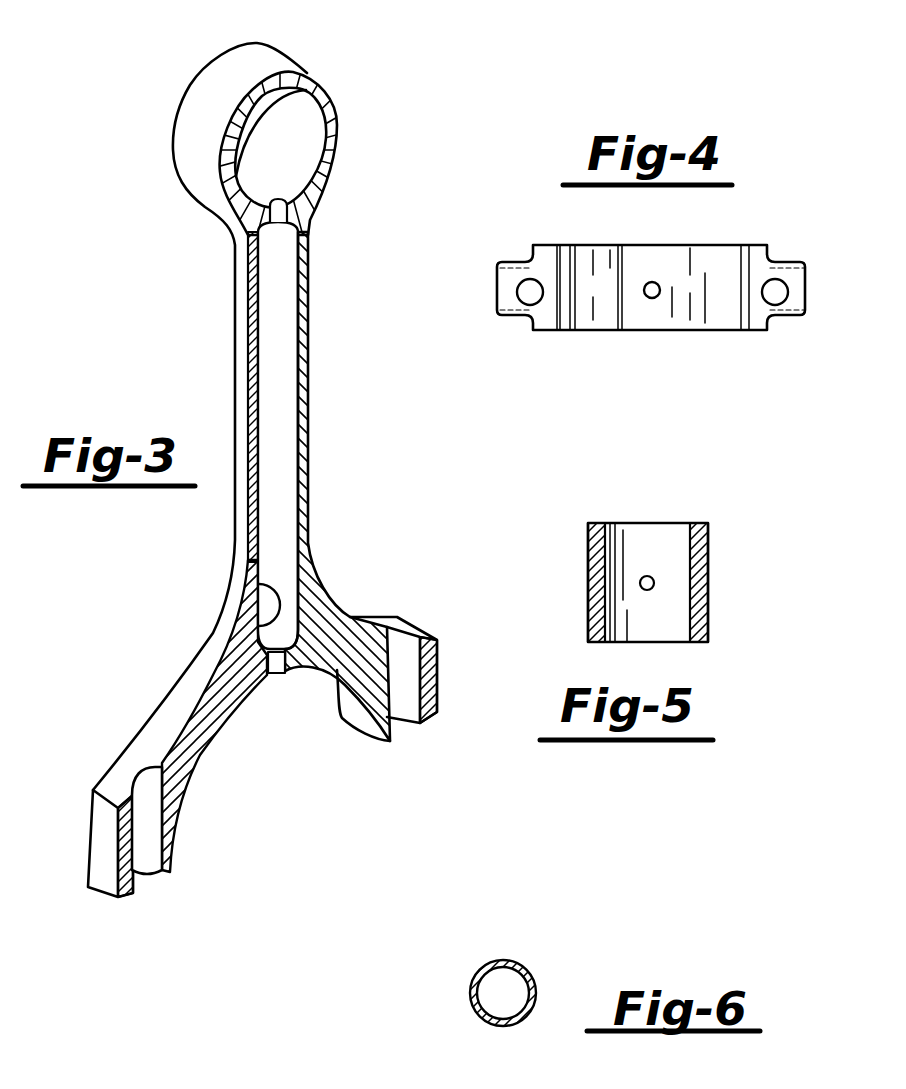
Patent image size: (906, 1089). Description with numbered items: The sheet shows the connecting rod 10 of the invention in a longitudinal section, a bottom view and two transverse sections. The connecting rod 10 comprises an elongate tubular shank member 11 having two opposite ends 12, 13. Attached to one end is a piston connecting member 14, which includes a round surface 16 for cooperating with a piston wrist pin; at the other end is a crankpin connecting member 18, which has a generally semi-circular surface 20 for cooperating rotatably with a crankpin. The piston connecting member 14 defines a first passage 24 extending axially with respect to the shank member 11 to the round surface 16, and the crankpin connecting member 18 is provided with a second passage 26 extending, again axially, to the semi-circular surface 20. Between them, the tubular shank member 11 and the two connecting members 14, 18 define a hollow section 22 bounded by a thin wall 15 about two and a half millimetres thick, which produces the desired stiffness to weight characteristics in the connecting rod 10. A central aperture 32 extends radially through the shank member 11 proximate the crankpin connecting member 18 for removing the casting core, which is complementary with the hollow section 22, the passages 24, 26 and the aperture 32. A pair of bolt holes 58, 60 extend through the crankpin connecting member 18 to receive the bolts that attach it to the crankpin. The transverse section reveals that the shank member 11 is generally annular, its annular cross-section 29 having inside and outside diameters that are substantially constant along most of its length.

In FIG. 3, the connecting rod 10 is at (178, 199).
In FIG. 3, the elongate tubular shank member 11 is at (307, 408).
In FIG. 6, the elongate tubular shank member 11 is at (537, 987).
In FIG. 3, the end 12 is at (310, 247).
In FIG. 3, the end 13 is at (305, 505).
In FIG. 3, the piston connecting member 14 is at (327, 163).
In FIG. 5, the piston connecting member 14 is at (597, 587).
In FIG. 3, the thin wall 15 is at (307, 470).
In FIG. 3, the round surface 16 is at (306, 128).
In FIG. 5, the round surface 16 is at (665, 538).
In FIG. 3, the crankpin connecting member 18 is at (350, 620).
In FIG. 4, the crankpin connecting member 18 is at (687, 245).
In FIG. 3, the semi-circular surface 20 is at (367, 717).
In FIG. 4, the semi-circular surface 20 is at (737, 267).
In FIG. 3, the hollow section 22 is at (277, 297).
In FIG. 6, the hollow section 22 is at (493, 1000).
In FIG. 3, the first passage 24 is at (273, 217).
In FIG. 5, the first passage 24 is at (653, 583).
In FIG. 3, the second passage 26 is at (280, 673).
In FIG. 4, the second passage 26 is at (653, 293).
In FIG. 6, the annular cross-section 29 is at (497, 958).
In FIG. 3, the central aperture 32 is at (267, 617).
In FIG. 3, the bolt hole 58 is at (150, 853).
In FIG. 4, the bolt hole 58 is at (527, 293).
In FIG. 3, the bolt hole 60 is at (403, 707).
In FIG. 4, the bolt hole 60 is at (777, 293).